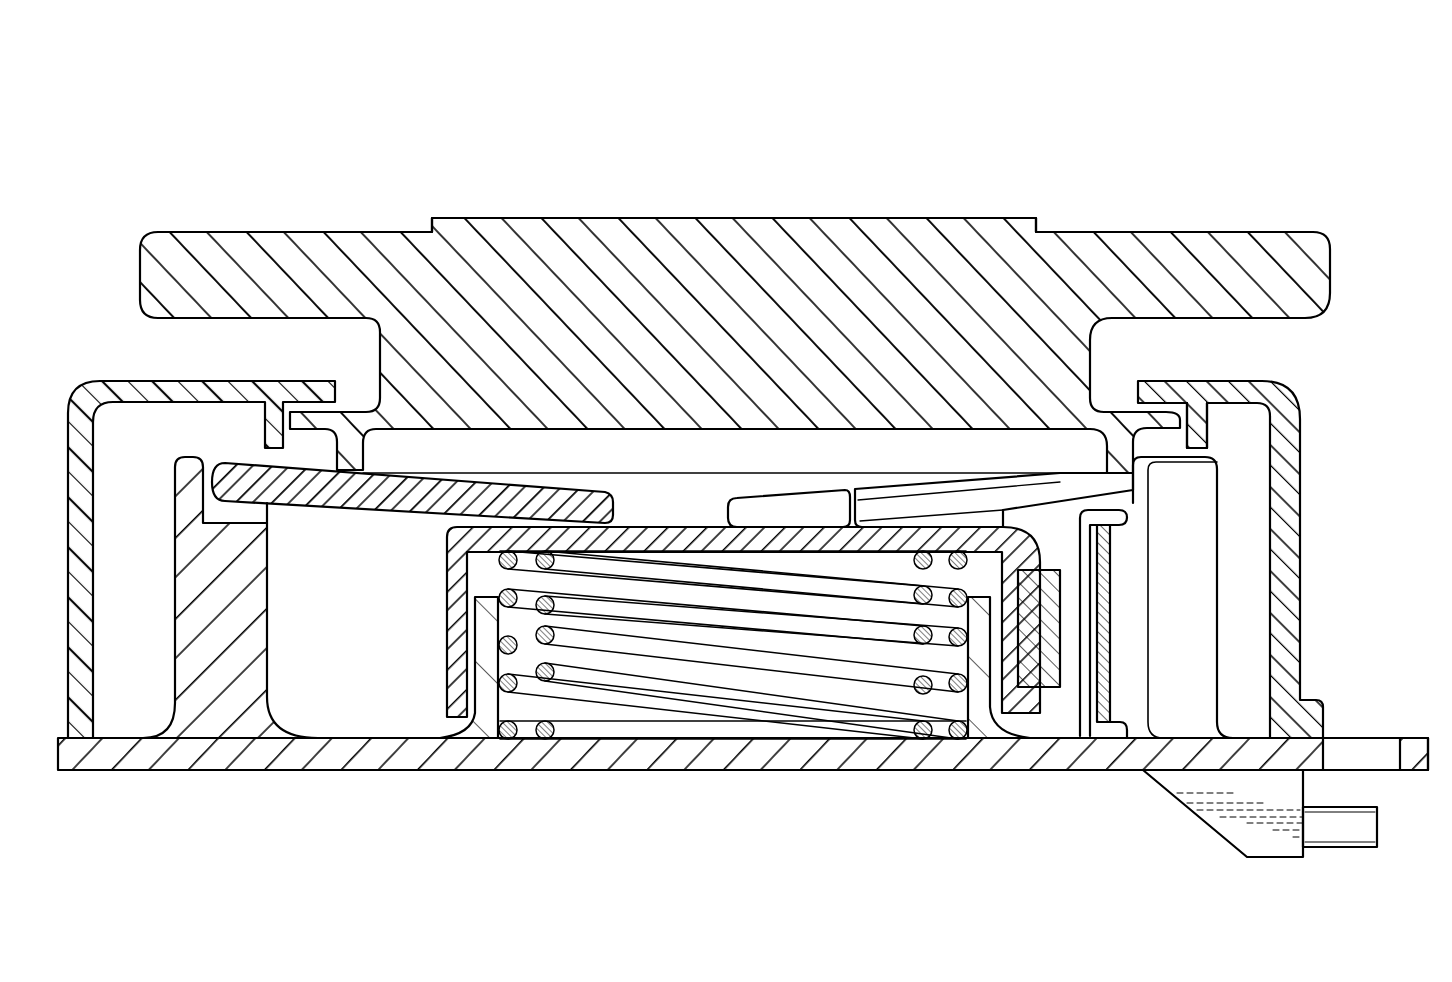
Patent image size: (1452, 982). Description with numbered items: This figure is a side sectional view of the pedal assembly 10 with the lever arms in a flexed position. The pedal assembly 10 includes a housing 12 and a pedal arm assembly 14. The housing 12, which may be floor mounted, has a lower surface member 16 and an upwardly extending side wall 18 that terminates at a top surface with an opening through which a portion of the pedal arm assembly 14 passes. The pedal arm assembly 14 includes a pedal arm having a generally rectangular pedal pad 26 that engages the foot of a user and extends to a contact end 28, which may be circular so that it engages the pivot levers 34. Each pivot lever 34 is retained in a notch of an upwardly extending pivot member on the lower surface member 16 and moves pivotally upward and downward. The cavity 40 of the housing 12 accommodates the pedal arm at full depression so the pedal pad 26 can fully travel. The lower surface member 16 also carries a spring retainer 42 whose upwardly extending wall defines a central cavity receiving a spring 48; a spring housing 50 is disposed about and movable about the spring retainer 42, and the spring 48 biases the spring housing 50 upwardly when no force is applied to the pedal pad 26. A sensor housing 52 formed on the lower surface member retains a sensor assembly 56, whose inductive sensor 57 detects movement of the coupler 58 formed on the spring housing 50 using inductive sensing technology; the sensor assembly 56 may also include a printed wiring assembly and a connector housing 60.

The pedal assembly 10 is at (810, 114).
The housing 12 is at (1326, 569).
The pedal arm assembly 14 is at (773, 305).
The lower surface member 16 is at (1260, 750).
The side wall 18 is at (720, 542).
The pedal pad 26 is at (982, 219).
The contact end 28 is at (1068, 444).
The pivot lever 34 is at (804, 515).
The cavity 40 is at (1172, 440).
The spring retainer 42 is at (487, 682).
The spring 48 is at (650, 692).
The spring housing 50 is at (445, 640).
The sensor housing 52 is at (1120, 713).
The sensor assembly 56 is at (1130, 562).
The inductive sensor 57 is at (1112, 628).
The coupler 58 is at (1043, 569).
The connector housing 60 is at (1273, 858).